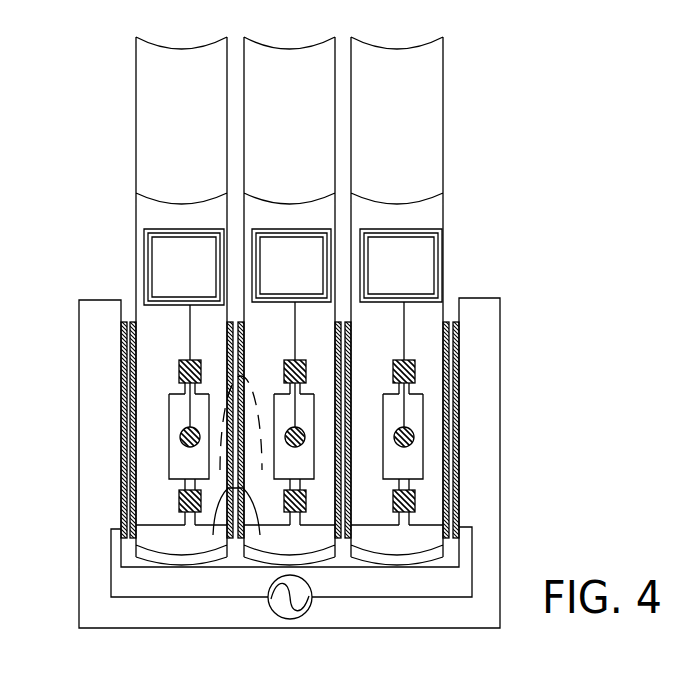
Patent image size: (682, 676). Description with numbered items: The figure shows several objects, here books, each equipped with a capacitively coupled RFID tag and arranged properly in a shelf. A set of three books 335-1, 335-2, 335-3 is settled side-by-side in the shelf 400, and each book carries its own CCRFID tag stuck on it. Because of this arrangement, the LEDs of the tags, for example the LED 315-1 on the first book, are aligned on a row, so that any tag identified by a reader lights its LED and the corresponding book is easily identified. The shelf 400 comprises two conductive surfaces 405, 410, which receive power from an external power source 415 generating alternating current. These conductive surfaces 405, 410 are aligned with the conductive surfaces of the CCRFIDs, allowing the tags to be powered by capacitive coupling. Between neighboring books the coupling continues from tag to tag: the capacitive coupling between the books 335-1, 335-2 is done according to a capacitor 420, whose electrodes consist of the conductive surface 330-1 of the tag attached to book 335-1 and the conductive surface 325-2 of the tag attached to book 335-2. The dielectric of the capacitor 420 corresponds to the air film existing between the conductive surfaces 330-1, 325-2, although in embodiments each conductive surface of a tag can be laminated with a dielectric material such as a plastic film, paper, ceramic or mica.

The book 335-1 is at (136, 82).
The book 335-2 is at (290, 48).
The book 335-3 is at (444, 83).
The LED 315-1 is at (190, 447).
The conductive surface 330-1 is at (217, 527).
The conductive surface 325-2 is at (260, 535).
The conductive surface 405 is at (120, 368).
The conductive surface 410 is at (460, 352).
The shelf 400 is at (501, 448).
The external power source 415 is at (312, 603).
The capacitor 420 is at (244, 566).